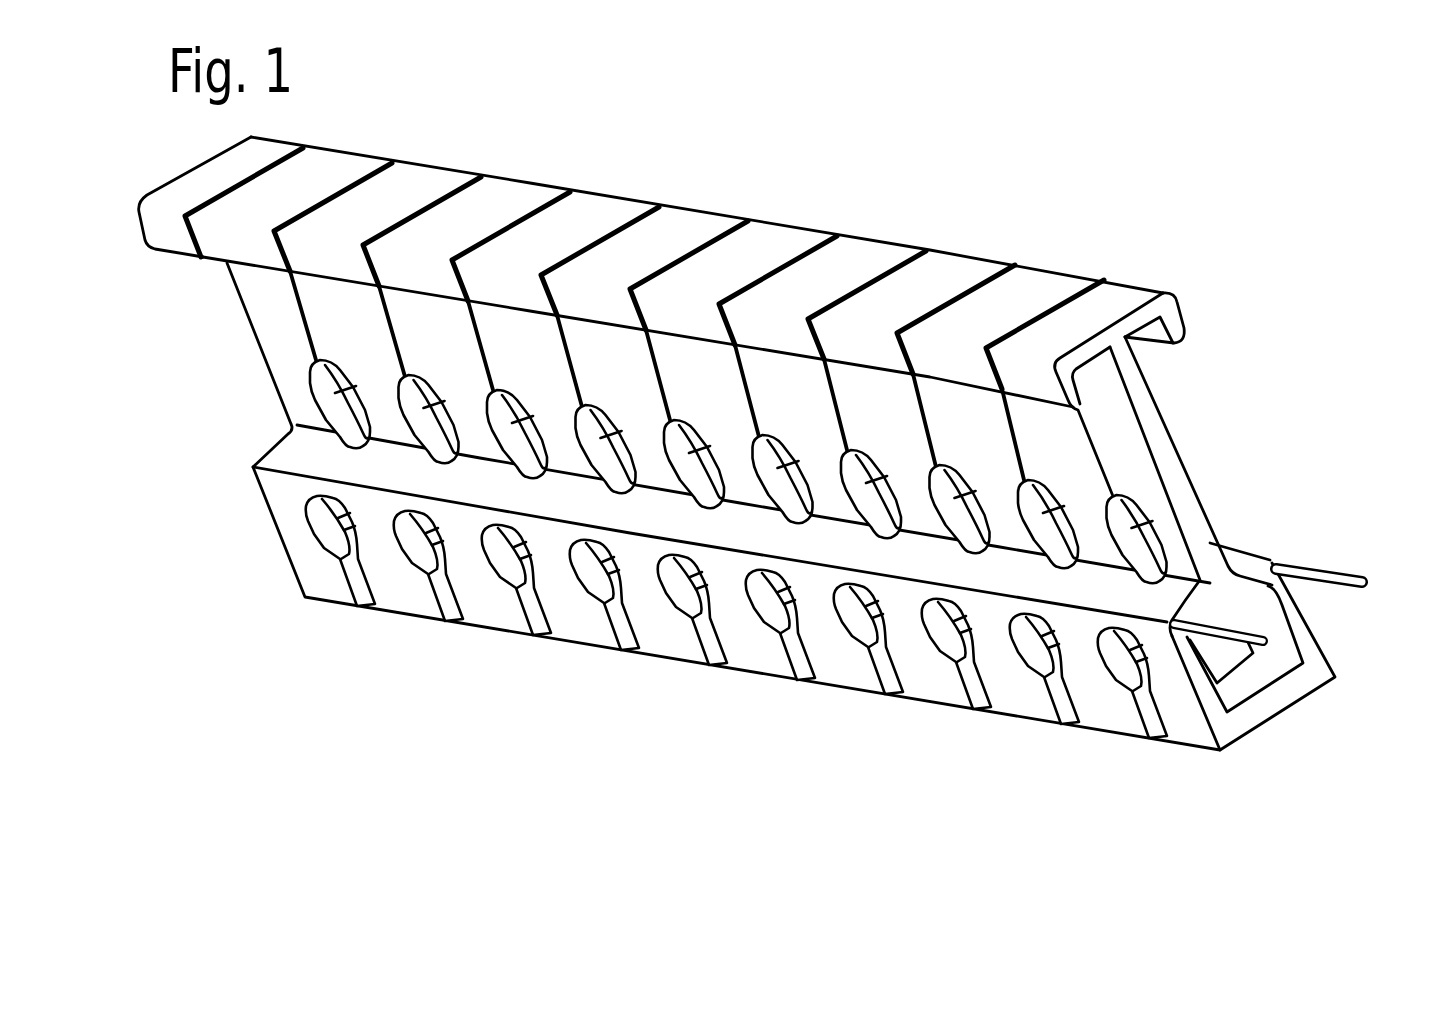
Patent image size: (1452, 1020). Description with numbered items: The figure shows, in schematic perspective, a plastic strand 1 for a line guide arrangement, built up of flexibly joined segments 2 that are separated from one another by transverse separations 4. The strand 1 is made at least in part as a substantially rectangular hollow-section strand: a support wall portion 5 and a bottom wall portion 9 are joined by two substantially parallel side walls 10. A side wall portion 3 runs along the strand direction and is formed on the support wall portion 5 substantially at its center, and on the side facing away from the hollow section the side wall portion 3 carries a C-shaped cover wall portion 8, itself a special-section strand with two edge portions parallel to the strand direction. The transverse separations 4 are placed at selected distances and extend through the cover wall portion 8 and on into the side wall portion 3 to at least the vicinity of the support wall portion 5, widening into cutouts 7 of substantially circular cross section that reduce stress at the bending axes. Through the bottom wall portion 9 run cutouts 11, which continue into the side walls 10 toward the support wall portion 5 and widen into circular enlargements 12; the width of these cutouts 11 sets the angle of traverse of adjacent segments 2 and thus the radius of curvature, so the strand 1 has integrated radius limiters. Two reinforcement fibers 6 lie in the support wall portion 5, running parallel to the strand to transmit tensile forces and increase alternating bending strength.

The strand 1 is at (662, 165).
The segments 2 is at (680, 371).
The side wall portion 3 is at (1172, 461).
The transverse separations 4 is at (842, 388).
The support wall portion 5 is at (1250, 584).
The reinforcement fibers 6 is at (1228, 626).
The cutouts 7 is at (877, 466).
The cover wall portion 8 is at (1054, 301).
The bottom wall portion 9 is at (1268, 707).
The side walls 10 is at (852, 666).
The cutouts 11 is at (632, 645).
The enlargements 12 is at (503, 580).